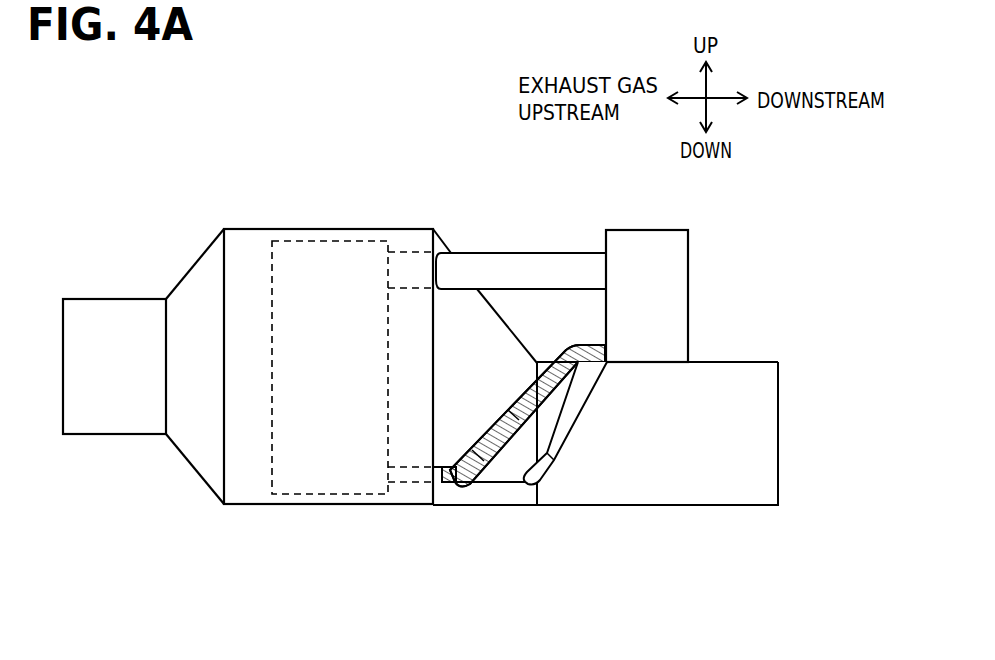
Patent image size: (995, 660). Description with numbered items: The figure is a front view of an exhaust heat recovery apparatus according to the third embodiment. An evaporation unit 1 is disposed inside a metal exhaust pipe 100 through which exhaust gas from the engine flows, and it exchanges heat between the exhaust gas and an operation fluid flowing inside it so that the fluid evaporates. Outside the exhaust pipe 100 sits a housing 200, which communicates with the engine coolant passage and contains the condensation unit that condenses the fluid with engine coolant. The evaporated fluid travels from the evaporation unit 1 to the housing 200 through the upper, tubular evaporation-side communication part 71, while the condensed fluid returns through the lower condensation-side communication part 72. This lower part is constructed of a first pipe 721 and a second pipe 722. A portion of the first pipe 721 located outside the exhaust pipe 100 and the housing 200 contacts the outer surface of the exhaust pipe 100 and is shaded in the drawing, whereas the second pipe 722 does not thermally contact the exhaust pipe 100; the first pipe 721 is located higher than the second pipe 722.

The evaporation unit 1 is at (305, 260).
The exhaust pipe 100 is at (243, 485).
The evaporation-side communication part 71 is at (532, 268).
The condensation-side communication part 72 is at (628, 565).
The first pipe 721 is at (495, 455).
The second pipe 722 is at (565, 430).
The housing 200 is at (672, 332).